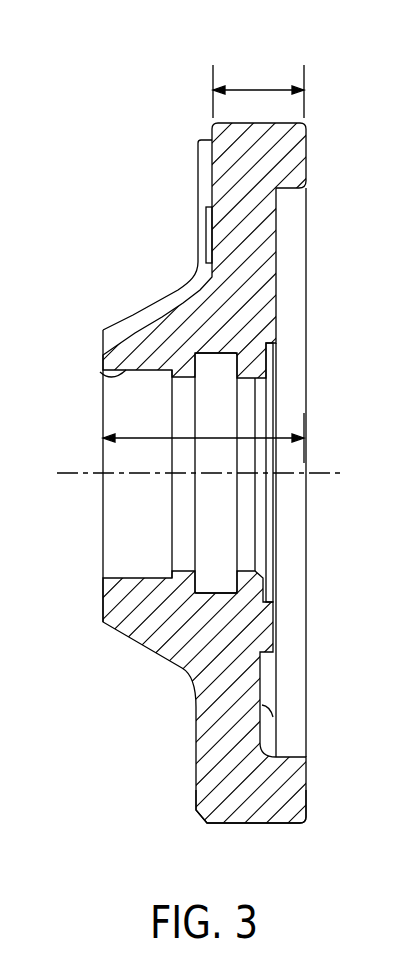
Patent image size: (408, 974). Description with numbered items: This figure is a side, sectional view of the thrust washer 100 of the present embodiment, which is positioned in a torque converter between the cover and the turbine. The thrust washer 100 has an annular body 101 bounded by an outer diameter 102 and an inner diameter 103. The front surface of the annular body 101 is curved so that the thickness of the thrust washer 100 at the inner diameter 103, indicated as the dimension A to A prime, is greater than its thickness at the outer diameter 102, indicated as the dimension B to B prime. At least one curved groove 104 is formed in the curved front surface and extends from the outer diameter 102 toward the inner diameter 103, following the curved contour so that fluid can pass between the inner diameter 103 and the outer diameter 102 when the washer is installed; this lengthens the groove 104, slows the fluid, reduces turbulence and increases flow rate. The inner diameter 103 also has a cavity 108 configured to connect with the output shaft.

The thrust washer 100 is at (204, 451).
The annular body 101 is at (188, 632).
The outer diameter 102 is at (275, 823).
The inner diameter 103 is at (100, 372).
The curved groove 104 is at (203, 283).
The cavity 108 is at (217, 372).